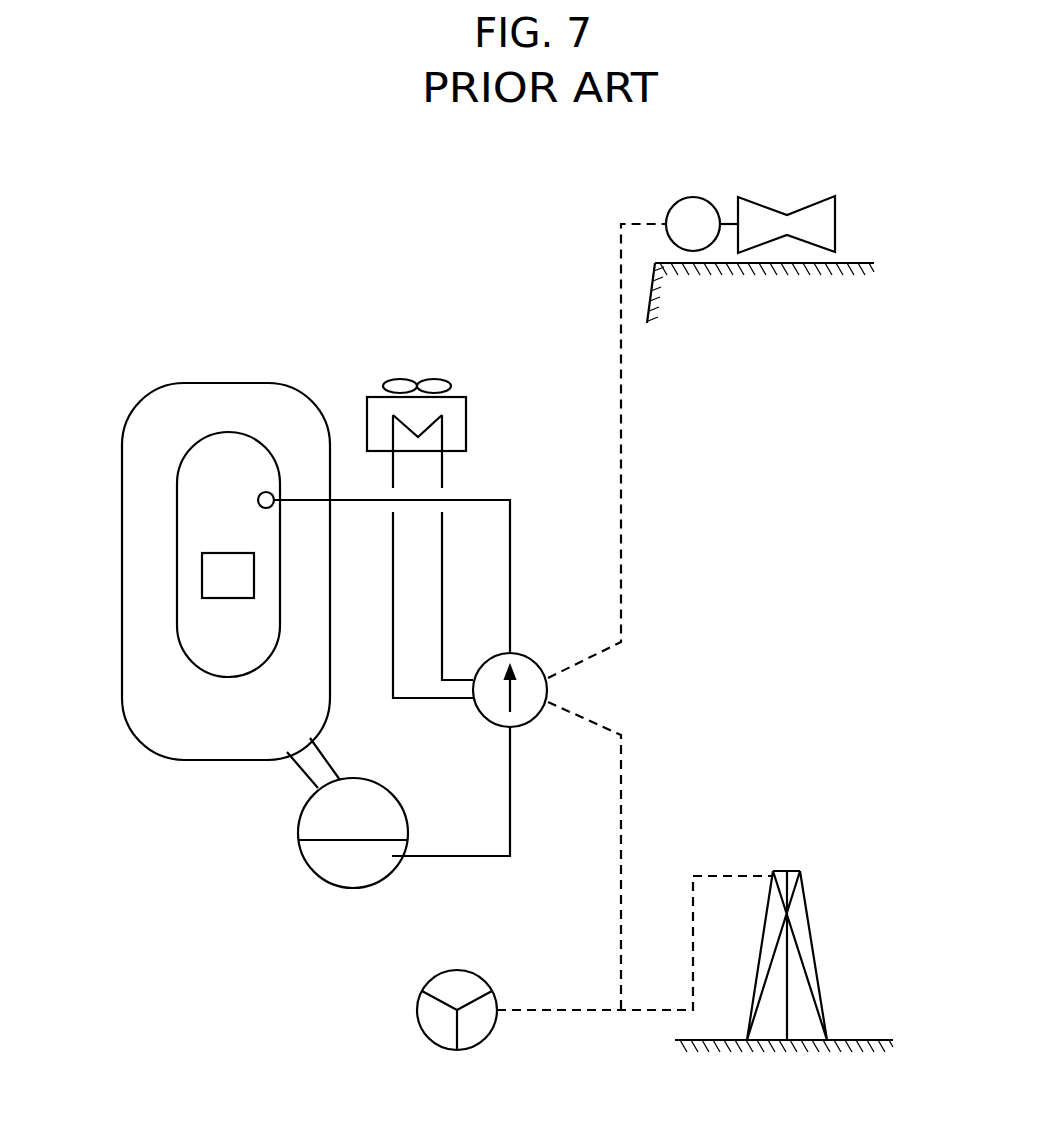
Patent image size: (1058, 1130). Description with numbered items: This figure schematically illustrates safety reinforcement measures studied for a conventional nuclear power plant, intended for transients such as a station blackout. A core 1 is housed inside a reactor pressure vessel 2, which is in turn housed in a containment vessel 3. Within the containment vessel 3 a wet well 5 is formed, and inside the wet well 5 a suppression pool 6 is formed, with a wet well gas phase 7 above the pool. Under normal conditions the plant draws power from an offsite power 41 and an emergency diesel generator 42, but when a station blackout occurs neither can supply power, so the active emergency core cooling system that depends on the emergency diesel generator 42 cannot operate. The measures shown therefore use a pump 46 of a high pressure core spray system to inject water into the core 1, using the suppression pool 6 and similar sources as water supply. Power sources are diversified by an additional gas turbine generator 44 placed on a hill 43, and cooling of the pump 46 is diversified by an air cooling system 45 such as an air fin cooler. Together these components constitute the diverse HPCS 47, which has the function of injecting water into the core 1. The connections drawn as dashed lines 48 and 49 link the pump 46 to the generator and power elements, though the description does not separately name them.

The core 1 is at (254, 577).
The reactor pressure vessel 2 is at (212, 432).
The containment vessel 3 is at (277, 388).
The wet well 5 is at (296, 827).
The suppression pool 6 is at (322, 856).
The wet well gas phase 7 is at (313, 820).
The offsite power 41 is at (787, 871).
The emergency diesel generator 42 is at (415, 1021).
The hill 43 is at (740, 270).
The gas turbine generator 44 is at (678, 197).
The air cooling system 45 is at (465, 382).
The pump 46 is at (548, 690).
The diverse HPCS 47 is at (792, 632).
The lower pipe 48 is at (652, 1012).
The upper pipe 49 is at (622, 507).